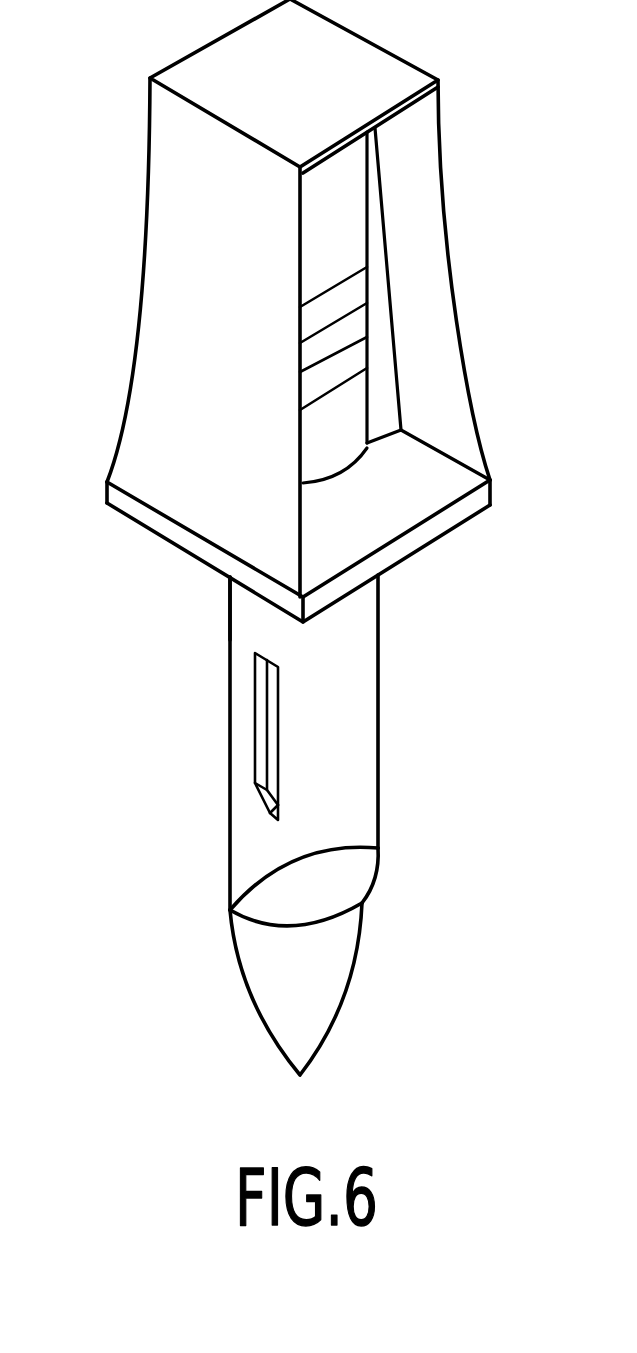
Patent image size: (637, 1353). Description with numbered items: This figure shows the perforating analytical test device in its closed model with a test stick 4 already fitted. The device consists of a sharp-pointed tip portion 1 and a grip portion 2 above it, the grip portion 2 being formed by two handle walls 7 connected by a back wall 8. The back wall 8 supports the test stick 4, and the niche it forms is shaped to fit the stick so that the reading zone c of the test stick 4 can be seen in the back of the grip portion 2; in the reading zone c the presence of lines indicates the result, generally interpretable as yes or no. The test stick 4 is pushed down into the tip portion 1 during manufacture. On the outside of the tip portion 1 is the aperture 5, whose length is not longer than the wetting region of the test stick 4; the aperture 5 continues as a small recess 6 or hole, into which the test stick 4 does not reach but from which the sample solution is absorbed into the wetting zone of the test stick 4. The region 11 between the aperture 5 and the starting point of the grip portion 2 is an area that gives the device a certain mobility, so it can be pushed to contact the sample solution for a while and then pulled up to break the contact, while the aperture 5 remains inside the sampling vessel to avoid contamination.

The tip portion 1 is at (357, 800).
The grip portion 2 is at (452, 533).
The test stick 4 is at (348, 210).
The aperture 5 is at (267, 737).
The recess 6 is at (272, 803).
The handle walls 7 is at (162, 355).
The back wall 8 is at (388, 400).
The region 11 is at (248, 623).
The reading zone c is at (357, 325).